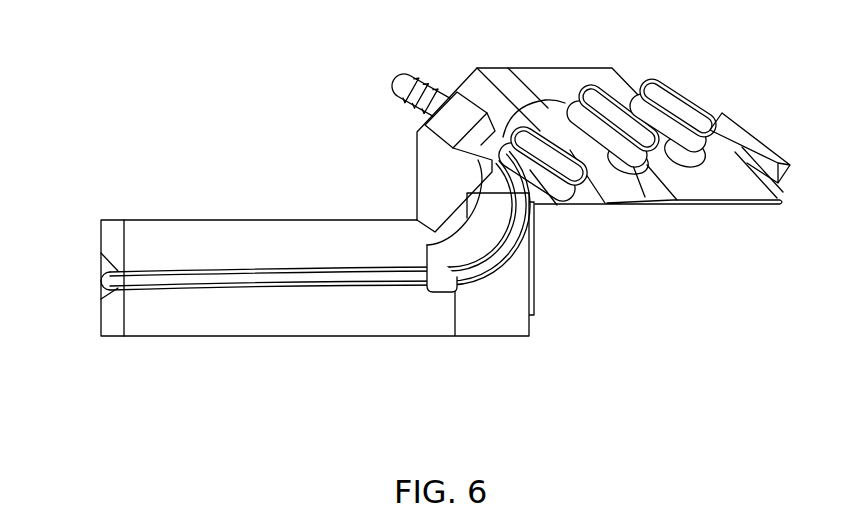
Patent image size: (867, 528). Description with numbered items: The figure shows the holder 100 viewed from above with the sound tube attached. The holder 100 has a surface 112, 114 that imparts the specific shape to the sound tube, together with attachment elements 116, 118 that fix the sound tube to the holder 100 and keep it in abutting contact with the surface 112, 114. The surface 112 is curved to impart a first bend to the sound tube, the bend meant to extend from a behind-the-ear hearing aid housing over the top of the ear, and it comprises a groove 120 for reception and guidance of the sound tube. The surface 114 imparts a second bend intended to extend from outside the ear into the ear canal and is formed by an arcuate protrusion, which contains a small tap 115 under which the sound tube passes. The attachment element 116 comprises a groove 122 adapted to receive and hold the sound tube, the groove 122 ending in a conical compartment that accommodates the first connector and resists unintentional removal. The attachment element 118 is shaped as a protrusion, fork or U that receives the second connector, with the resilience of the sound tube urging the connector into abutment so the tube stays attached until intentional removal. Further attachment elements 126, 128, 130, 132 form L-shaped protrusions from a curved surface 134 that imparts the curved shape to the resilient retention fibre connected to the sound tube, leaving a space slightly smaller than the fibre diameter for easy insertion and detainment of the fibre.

The holder 100 is at (181, 78).
The surface 112 is at (306, 318).
The surface 114 is at (500, 242).
The tap 115 is at (442, 289).
The attachment element 116 is at (105, 316).
The attachment element 118 is at (480, 95).
The groove 120 is at (272, 270).
The groove 122 is at (105, 266).
The attachment element 126 is at (532, 143).
The attachment element 128 is at (610, 98).
The attachment element 130 is at (663, 118).
The attachment element 132 is at (748, 146).
The curved surface 134 is at (680, 178).